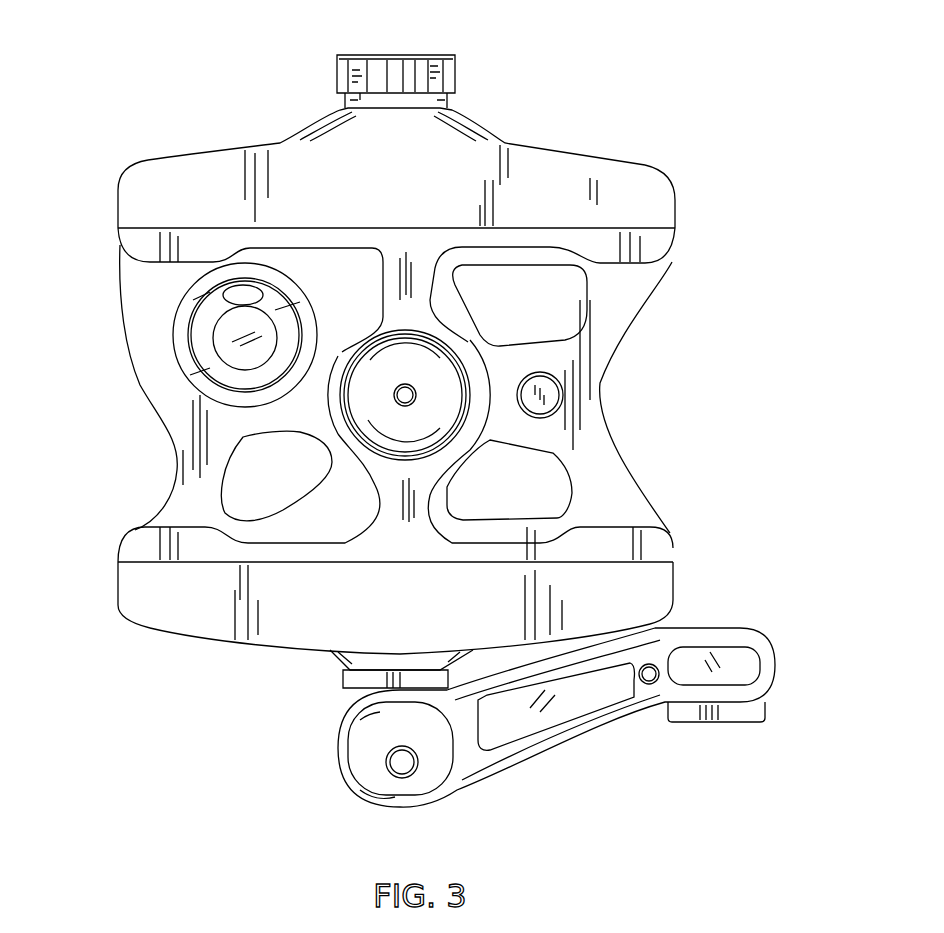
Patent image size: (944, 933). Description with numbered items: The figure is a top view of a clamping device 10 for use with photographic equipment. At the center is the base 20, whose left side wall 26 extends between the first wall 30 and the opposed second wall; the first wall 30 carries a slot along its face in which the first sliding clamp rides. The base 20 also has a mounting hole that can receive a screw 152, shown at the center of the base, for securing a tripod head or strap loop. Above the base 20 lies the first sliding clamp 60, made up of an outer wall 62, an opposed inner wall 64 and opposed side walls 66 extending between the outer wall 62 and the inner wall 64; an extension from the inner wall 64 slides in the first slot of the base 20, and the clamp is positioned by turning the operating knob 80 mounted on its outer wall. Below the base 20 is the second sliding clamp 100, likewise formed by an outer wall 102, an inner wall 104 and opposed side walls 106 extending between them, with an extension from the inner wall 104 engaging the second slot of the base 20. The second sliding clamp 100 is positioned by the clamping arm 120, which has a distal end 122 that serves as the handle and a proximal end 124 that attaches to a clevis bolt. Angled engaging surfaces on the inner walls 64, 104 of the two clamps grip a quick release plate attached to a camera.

The clamping device 10 is at (98, 112).
The base 20 is at (252, 440).
The left side wall 26 is at (133, 383).
The first wall 30 is at (600, 385).
The first sliding clamp 60 is at (397, 167).
The outer wall 62 is at (190, 150).
The inner wall 64 is at (130, 252).
The side walls 66 is at (118, 203).
The operating knob 80 is at (412, 55).
The second sliding clamp 100 is at (395, 636).
The outer wall 102 is at (264, 652).
The inner wall 104 is at (672, 548).
The side walls 106 is at (118, 593).
The clamping arm 120 is at (563, 733).
The distal end 122 is at (777, 663).
The proximal end 124 is at (348, 780).
The screw 152 is at (410, 430).